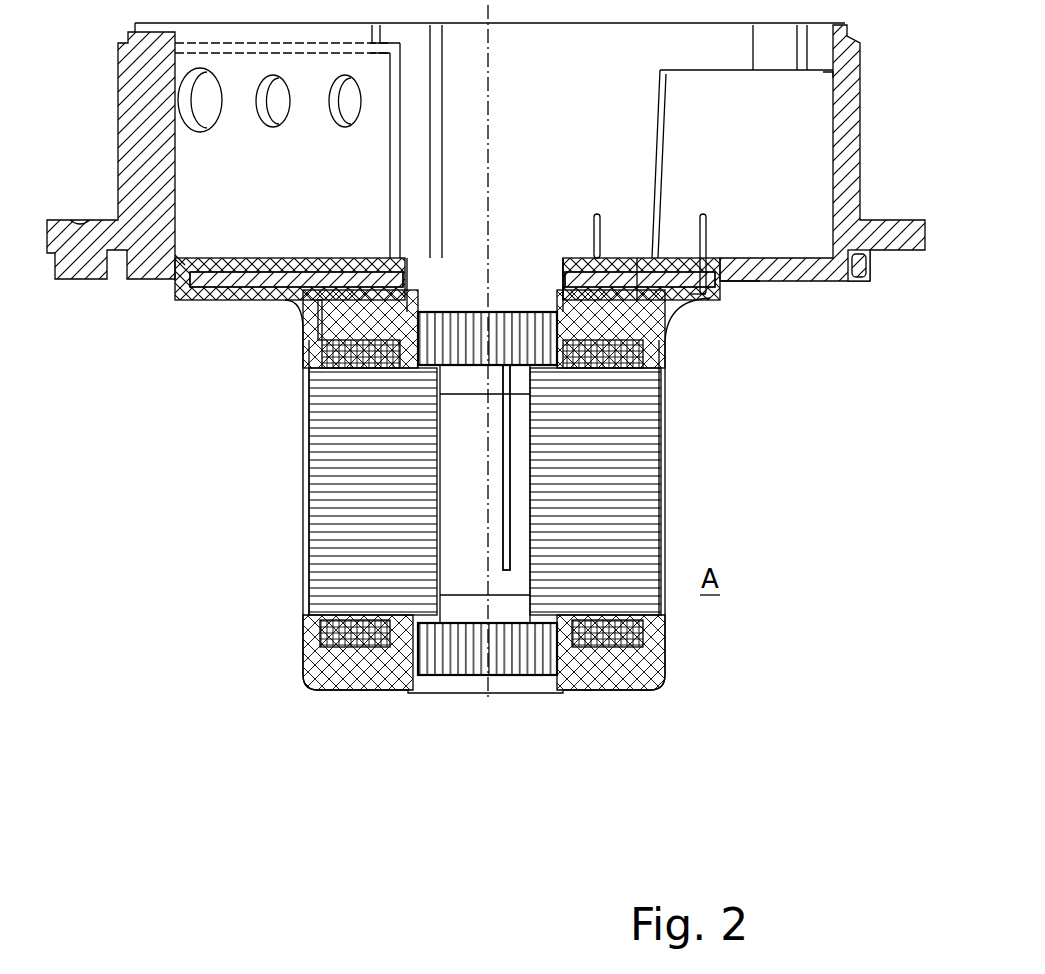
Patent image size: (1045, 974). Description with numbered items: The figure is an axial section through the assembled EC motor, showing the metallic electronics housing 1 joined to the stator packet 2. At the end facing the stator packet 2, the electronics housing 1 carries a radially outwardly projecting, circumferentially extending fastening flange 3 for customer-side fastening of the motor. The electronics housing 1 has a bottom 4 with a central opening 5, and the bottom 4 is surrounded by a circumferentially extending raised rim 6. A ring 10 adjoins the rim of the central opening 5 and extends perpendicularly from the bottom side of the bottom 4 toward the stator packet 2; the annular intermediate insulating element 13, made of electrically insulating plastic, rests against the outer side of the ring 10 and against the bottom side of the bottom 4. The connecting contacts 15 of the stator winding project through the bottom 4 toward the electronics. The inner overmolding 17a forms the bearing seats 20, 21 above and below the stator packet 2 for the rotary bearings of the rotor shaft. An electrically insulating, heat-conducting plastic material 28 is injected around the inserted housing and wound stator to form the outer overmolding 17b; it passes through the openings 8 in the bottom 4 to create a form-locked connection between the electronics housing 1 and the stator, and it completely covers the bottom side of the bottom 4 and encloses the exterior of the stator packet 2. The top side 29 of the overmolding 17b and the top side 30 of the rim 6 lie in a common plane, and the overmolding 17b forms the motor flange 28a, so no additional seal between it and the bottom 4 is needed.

The electronics housing 1 is at (100, 92).
The stator packet 2 is at (652, 533).
The fastening flange 3 is at (88, 258).
The bottom 4 is at (212, 287).
The central opening 5 is at (518, 290).
The raised rim 6 is at (175, 272).
The openings 8 is at (240, 300).
The ring 10 is at (600, 340).
The intermediate insulating element 13 is at (340, 347).
The connecting contacts 15 is at (595, 218).
The inner overmolding 17a is at (582, 293).
The outer overmolding 17b is at (673, 302).
The bearing seat 20 is at (450, 345).
The bearing seat 21 is at (452, 655).
The plastic material 28 is at (275, 295).
The motor flange 28a is at (742, 297).
The top side 29 is at (263, 265).
The top side 30 is at (183, 263).